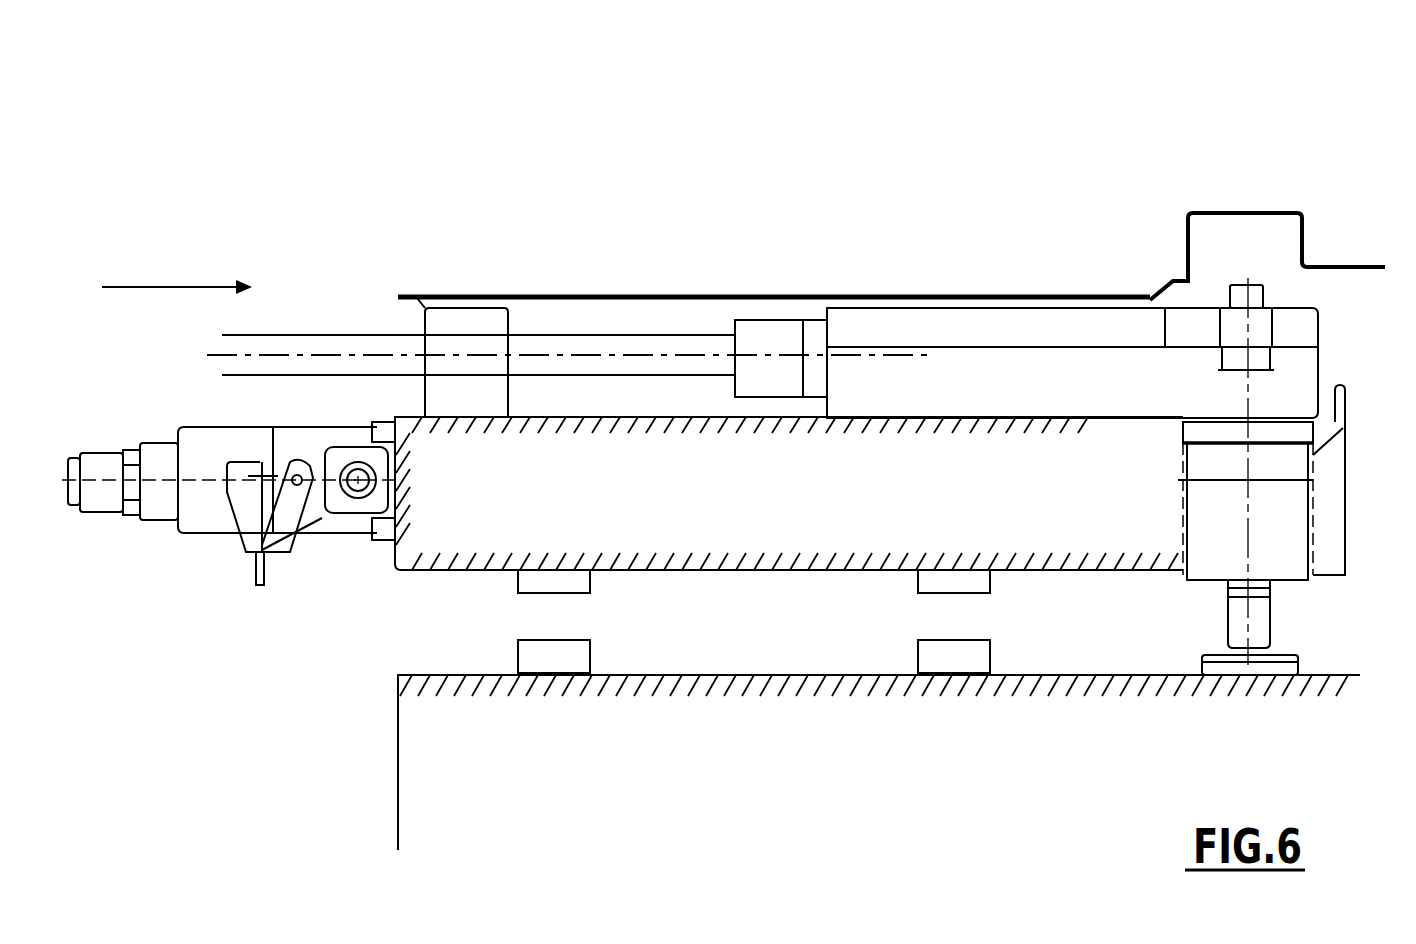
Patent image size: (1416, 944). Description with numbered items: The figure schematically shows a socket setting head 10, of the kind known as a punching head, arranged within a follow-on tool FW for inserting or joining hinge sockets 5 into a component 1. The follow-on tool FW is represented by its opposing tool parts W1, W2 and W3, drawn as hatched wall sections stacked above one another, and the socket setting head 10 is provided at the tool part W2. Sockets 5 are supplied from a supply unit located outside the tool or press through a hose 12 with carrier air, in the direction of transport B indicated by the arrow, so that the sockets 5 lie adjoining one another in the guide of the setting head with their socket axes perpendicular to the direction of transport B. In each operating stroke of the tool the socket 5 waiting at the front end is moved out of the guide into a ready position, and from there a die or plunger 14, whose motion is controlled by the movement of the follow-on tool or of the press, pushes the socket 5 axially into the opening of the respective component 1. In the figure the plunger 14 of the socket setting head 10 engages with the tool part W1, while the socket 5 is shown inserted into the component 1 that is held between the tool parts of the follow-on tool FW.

The component 1 is at (997, 330).
The socket 5 is at (1235, 355).
The socket setting head 10 is at (1177, 600).
The hose 12 is at (332, 347).
The plunger 14 is at (1260, 630).
The tool part W1 is at (778, 698).
The tool part W2 is at (723, 515).
The tool part W3 is at (717, 297).
The follow-on tool FW is at (977, 197).
The direction of transport B is at (177, 264).